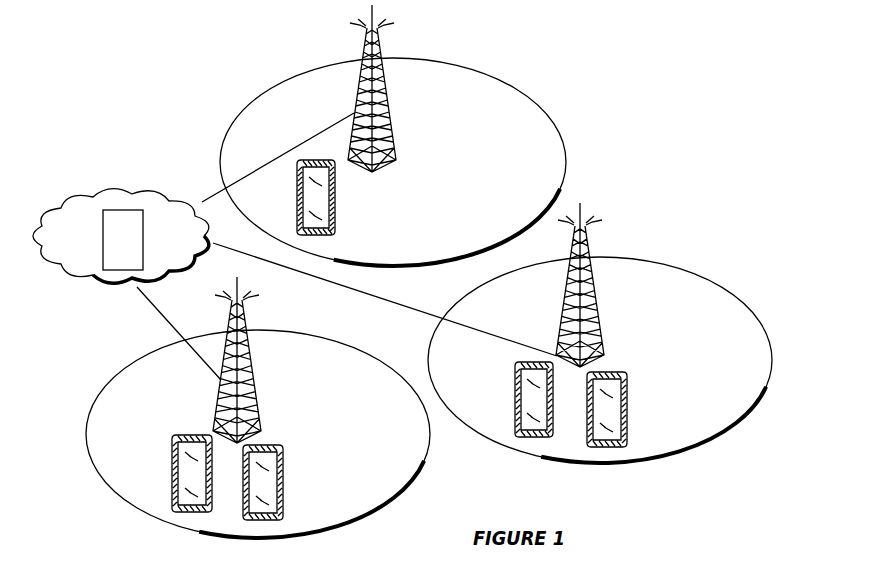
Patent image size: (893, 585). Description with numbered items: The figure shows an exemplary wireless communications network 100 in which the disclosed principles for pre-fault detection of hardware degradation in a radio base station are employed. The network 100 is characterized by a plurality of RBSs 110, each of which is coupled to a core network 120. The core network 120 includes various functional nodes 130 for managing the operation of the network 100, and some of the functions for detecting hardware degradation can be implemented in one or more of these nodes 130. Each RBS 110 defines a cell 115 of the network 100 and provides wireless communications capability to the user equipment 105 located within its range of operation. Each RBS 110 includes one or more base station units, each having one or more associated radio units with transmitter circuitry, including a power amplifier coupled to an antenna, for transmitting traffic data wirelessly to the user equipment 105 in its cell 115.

The wireless communications network 100 is at (627, 58).
The user equipment 105 is at (336, 212).
The RBS 110 is at (391, 108).
The cell 115 is at (465, 63).
The core network 120 is at (142, 184).
The functional nodes 130 is at (139, 254).